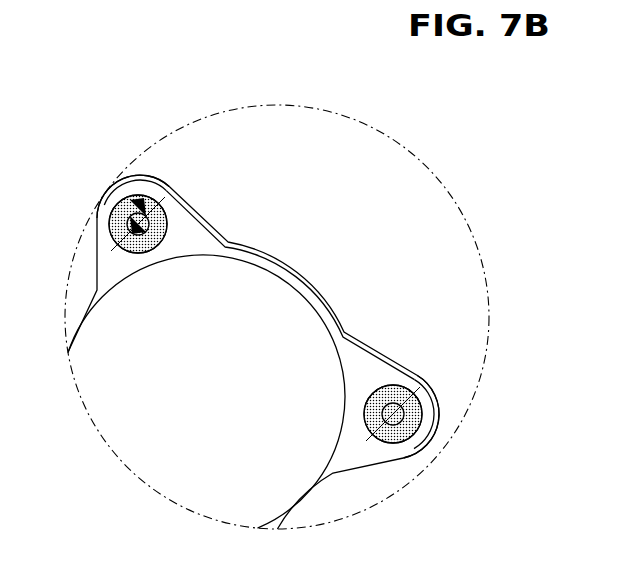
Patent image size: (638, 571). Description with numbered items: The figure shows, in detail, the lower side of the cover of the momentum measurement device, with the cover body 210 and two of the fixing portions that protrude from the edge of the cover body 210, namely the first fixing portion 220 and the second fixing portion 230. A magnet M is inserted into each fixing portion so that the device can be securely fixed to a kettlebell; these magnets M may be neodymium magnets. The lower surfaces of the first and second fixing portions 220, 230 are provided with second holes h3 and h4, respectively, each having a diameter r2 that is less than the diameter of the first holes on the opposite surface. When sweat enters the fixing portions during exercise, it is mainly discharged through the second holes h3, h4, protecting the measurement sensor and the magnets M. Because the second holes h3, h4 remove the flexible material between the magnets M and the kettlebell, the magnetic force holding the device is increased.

The cover body 210 is at (313, 289).
The first fixing portion 220 is at (184, 206).
The second fixing portion 230 is at (397, 367).
The second hole h3 is at (129, 193).
The second hole h4 is at (402, 437).
The diameter of the second holes r2 is at (138, 216).
The magnet M is at (160, 228).